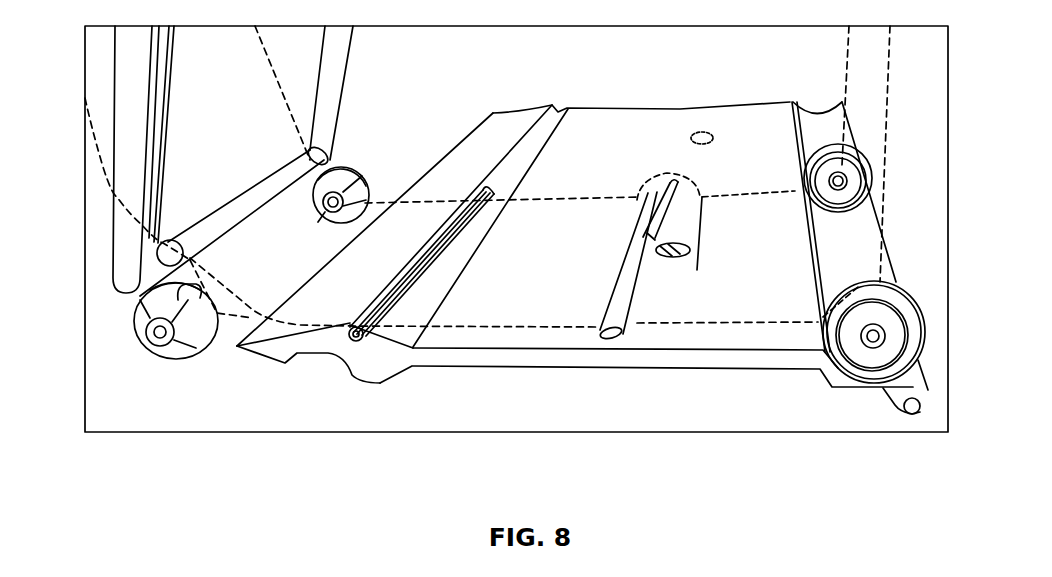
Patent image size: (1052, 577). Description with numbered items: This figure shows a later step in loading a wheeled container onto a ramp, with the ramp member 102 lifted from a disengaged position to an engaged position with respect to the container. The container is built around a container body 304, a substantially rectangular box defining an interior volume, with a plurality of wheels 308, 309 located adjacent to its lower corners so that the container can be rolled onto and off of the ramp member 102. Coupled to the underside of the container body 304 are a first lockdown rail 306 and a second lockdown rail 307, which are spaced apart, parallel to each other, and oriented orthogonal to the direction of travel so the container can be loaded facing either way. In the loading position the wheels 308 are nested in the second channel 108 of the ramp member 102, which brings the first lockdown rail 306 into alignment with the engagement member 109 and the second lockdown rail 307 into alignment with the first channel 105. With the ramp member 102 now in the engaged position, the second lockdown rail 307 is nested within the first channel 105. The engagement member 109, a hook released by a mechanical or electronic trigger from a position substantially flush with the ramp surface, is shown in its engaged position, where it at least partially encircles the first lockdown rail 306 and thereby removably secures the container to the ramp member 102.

The ramp member 102 is at (437, 340).
The first channel 105 is at (364, 338).
The second channel 108 is at (865, 377).
The engagement member 109 is at (693, 255).
The container body 304 is at (103, 123).
The first lockdown rail 306 is at (625, 338).
The second lockdown rail 307 is at (300, 325).
The wheels 308 is at (893, 328).
The wheels 309 is at (178, 333).